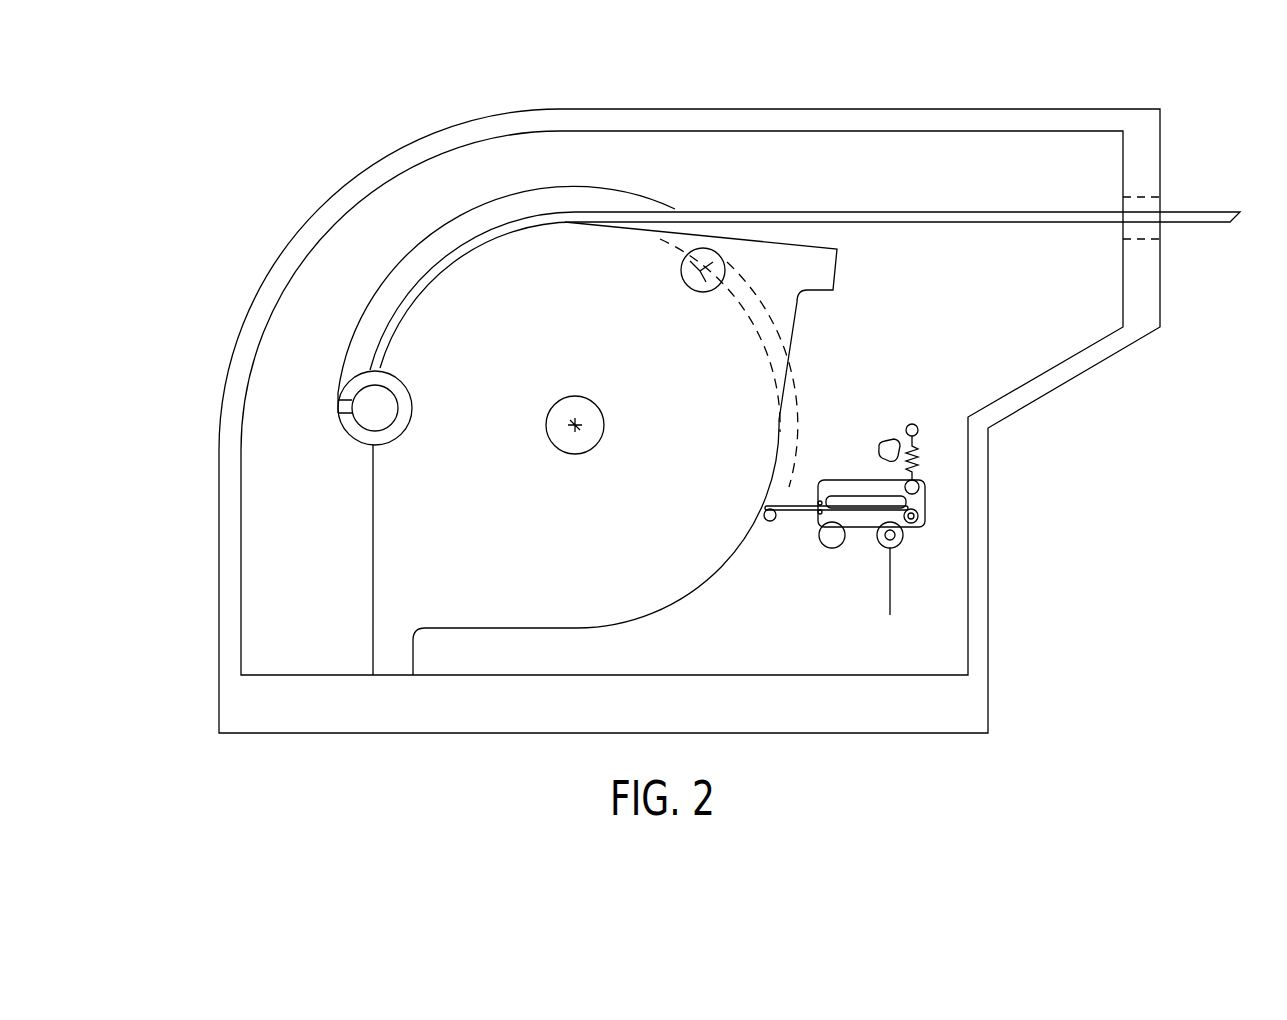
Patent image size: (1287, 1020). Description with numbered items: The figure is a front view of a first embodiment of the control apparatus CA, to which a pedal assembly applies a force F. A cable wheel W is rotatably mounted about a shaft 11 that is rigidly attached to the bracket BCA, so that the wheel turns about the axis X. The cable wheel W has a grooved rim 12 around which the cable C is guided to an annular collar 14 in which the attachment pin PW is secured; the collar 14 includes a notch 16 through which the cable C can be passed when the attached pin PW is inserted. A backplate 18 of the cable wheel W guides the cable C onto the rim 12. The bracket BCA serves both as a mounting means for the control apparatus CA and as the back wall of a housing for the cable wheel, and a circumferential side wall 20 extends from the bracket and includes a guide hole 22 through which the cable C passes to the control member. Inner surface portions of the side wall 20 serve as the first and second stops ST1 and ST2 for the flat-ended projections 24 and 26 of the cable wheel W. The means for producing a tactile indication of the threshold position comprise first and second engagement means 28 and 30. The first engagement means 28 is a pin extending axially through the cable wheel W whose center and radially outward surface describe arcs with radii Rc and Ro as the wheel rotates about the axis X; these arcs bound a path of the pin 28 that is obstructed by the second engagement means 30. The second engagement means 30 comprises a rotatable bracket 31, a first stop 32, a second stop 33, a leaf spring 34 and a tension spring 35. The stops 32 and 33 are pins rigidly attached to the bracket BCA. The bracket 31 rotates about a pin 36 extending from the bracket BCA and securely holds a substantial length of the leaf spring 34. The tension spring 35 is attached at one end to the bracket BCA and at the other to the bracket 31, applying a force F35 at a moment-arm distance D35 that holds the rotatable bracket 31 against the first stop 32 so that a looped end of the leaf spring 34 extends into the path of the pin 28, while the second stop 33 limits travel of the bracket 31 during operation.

The shaft 11 is at (558, 420).
The grooved rim 12 is at (423, 299).
The annular collar 14 is at (388, 377).
The notch 16 is at (340, 406).
The backplate 18 is at (470, 226).
The circumferential side wall 20 is at (614, 724).
The guide hole 22 is at (1140, 197).
The flat-ended projection 24 is at (407, 664).
The flat-ended projection 26 is at (811, 282).
The first engagement means 28 is at (683, 284).
The second engagement means 30 is at (898, 599).
The rotatable bracket 31 is at (925, 490).
The first stop 32 is at (823, 546).
The second stop 33 is at (883, 446).
The leaf spring 34 is at (790, 527).
The tension spring 35 is at (926, 456).
The pin 36 is at (876, 538).
The cable C is at (880, 212).
The control apparatus CA is at (1042, 559).
The axis X is at (570, 430).
The cable wheel W is at (640, 554).
The attachment pin PW is at (355, 432).
The force F is at (1248, 232).
The radius of pin center arc Rc is at (750, 331).
The radius of pin outward surface arc Ro is at (787, 468).
The first stop ST1 is at (400, 681).
The second stop ST2 is at (805, 683).
The bracket BCA is at (752, 655).
The moment-arm distance D35 is at (887, 590).
The force of tension spring F35 is at (915, 548).